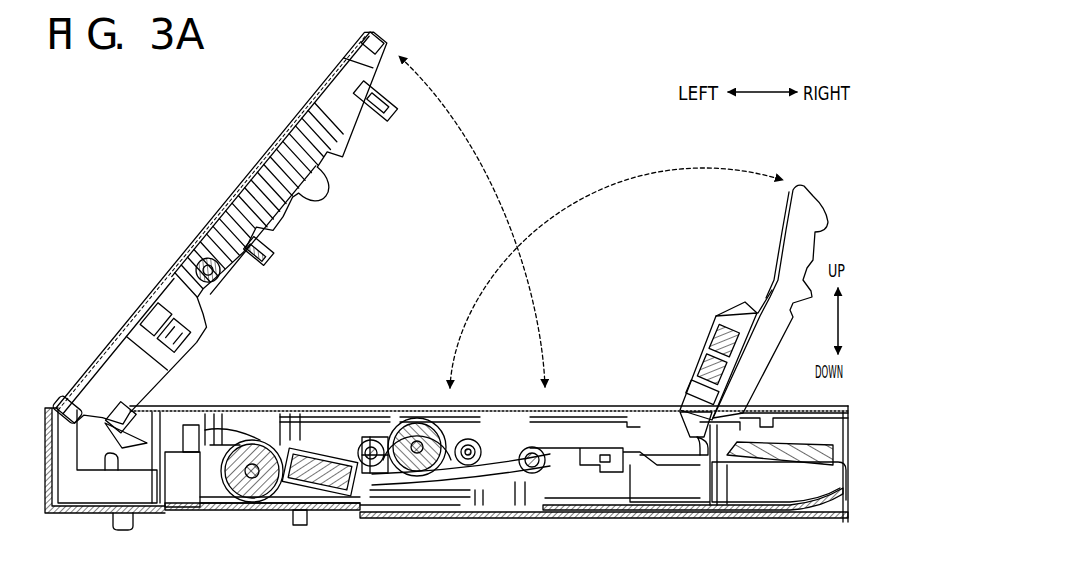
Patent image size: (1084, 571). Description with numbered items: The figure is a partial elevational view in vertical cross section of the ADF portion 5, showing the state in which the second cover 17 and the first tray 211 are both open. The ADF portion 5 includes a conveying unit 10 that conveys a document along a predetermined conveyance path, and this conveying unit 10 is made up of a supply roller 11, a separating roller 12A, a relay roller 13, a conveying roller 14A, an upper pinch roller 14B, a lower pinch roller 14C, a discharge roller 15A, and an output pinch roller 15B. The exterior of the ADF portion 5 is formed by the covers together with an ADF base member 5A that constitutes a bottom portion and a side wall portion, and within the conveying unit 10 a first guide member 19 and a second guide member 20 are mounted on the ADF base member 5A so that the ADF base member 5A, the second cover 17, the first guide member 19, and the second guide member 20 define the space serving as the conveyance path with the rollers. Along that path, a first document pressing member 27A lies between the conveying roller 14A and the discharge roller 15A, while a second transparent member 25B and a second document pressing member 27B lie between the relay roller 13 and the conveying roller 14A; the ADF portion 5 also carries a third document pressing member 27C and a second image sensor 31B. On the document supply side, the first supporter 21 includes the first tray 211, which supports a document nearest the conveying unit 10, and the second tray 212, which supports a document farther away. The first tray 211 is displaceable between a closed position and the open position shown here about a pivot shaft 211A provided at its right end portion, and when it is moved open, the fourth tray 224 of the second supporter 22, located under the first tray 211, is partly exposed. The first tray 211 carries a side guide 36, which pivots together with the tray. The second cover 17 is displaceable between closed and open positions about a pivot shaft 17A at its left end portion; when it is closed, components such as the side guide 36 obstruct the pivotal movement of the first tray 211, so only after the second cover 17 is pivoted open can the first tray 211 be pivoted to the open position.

The ADF portion 5 is at (235, 240).
The second cover 17 is at (222, 220).
The upper pinch roller 14B is at (225, 278).
The second document pressing member 27B is at (268, 253).
The pivot shaft 17A is at (70, 395).
The conveying unit 10 is at (409, 378).
The conveying roller 14A is at (248, 442).
The lower pinch roller 14C is at (240, 505).
The second transparent member 25B is at (292, 450).
The second image sensor 31B is at (326, 452).
The relay roller 13 is at (368, 438).
The separating roller 12A is at (412, 417).
The supply roller 11 is at (476, 438).
The second guide member 20 is at (508, 492).
The ADF base member 5A is at (534, 497).
The first document pressing member 27A is at (310, 526).
The third document pressing member 27C is at (428, 517).
The first guide member 19 is at (577, 507).
The discharge roller 15A is at (540, 500).
The output pinch roller 15B is at (572, 505).
The second supporter 22 is at (640, 498).
The side guide 36 is at (805, 200).
The first tray 211 is at (771, 285).
The first supporter 21 is at (812, 412).
The second tray 212 is at (807, 430).
The pivot shaft 211A is at (690, 438).
The fourth tray 224 is at (762, 512).